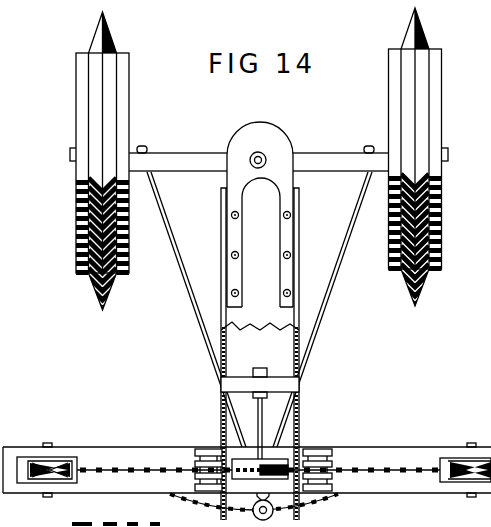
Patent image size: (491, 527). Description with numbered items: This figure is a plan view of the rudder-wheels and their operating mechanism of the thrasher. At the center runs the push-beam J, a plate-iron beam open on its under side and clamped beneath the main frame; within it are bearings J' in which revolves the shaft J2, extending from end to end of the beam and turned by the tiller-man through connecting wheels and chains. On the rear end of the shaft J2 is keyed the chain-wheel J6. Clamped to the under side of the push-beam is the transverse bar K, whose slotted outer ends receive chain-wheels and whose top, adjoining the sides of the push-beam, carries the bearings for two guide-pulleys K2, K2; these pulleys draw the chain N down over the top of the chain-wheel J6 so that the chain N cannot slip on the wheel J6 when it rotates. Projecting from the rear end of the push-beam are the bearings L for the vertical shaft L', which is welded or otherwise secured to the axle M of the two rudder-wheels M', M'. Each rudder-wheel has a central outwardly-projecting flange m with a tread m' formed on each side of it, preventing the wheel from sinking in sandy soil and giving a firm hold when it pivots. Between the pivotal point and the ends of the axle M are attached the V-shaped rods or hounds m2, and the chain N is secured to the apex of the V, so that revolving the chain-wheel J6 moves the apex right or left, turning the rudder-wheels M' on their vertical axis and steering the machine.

The axle M is at (259, 146).
The rudder-wheel M' is at (247, 163).
The central outwardly-projecting flange m is at (120, 165).
The tread m' is at (91, 164).
The rods or hounds m2 is at (323, 317).
The bearing L is at (260, 204).
The vertical shaft L' is at (281, 139).
The push-beam J is at (260, 354).
The bearing J' is at (229, 383).
The shaft J2 is at (258, 410).
The chain-wheel J6 is at (316, 462).
The transverse bar K is at (113, 455).
The guide-pulley K2 is at (362, 442).
The chain N is at (322, 500).